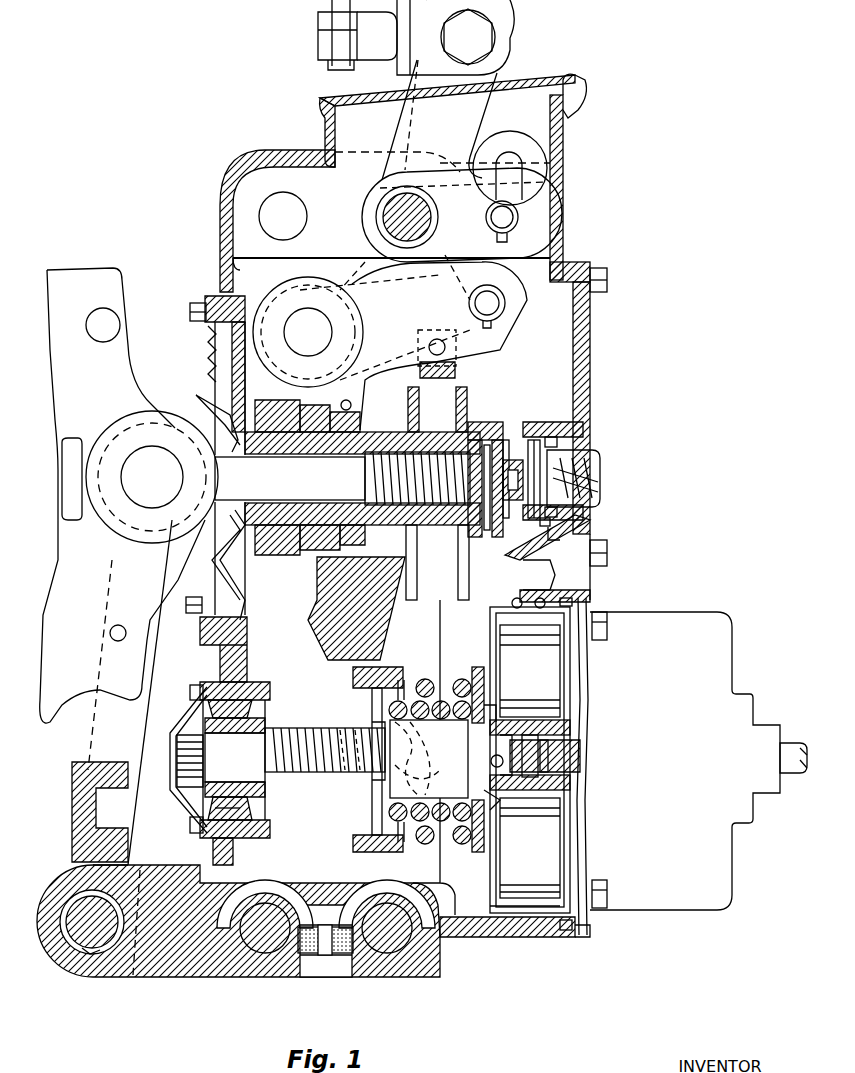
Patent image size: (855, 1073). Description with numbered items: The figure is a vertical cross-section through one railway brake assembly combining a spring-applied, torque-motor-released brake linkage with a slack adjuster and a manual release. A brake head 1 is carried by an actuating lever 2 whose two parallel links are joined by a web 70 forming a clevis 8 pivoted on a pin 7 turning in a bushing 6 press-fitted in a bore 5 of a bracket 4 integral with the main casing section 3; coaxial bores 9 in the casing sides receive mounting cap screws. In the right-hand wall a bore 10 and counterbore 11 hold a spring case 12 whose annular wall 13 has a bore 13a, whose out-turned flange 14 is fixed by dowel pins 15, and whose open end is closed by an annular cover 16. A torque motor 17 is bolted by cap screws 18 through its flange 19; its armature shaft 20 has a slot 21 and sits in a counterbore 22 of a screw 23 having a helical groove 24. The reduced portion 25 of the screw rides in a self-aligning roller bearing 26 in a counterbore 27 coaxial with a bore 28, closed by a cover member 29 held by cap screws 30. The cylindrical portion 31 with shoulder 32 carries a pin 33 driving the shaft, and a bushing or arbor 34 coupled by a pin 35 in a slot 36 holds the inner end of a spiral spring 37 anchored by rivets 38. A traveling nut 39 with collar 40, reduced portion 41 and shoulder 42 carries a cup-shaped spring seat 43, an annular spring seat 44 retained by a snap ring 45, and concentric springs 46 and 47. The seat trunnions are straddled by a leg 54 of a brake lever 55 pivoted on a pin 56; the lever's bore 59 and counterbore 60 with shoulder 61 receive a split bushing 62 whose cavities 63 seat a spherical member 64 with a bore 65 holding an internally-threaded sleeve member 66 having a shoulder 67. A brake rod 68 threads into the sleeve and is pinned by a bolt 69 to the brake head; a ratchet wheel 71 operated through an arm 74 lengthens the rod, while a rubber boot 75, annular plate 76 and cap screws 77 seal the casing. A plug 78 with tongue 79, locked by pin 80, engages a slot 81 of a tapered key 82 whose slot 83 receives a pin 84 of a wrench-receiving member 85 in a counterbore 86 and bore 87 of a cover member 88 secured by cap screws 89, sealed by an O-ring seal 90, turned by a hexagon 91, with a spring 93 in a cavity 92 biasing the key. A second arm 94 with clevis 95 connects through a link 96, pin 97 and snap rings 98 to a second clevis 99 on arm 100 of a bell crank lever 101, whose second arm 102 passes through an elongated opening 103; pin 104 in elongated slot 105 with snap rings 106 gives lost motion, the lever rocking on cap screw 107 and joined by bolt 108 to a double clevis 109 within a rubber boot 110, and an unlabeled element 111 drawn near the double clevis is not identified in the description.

The brake head 1 is at (48, 712).
The actuating lever 2 is at (96, 748).
The main casing section 3 is at (222, 245).
The bracket 4 is at (172, 960).
The bore 5 is at (100, 952).
The bushing 6 is at (75, 940).
The pin 7 is at (88, 935).
The clevis 8 is at (70, 865).
The bores 9 is at (259, 213).
The bore 10 is at (525, 922).
The counterbore 11 is at (585, 935).
The spring case 12 is at (480, 937).
The annular wall 13 is at (490, 862).
The bore 13a is at (496, 710).
The out-turned flange 14 is at (590, 592).
The dowel pins 15 is at (572, 602).
The annular cover 16 is at (560, 860).
The torque motor 17 is at (728, 860).
The cap screws 18 is at (607, 616).
The flange 19 is at (588, 928).
The armature shaft 20 is at (580, 752).
The slot 21 is at (545, 790).
The counterbore 22 is at (565, 772).
The screw 23 is at (312, 775).
The helical groove 24 is at (302, 775).
The reduced portion 25 is at (250, 740).
The self-aligning roller bearing 26 is at (240, 812).
The counterbore 27 is at (258, 688).
The bore 28 is at (250, 708).
The cover member 29 is at (172, 788).
The cap screws 30 is at (190, 700).
The cylindrical portion 31 is at (515, 738).
The shoulder 32 is at (497, 800).
The pin 33 is at (570, 785).
The bushing or arbor 34 is at (570, 732).
The pin 35 is at (492, 768).
The slot 36 is at (483, 765).
The spiral spring 37 is at (548, 672).
The rivets 38 is at (512, 600).
The traveling nut 39 is at (385, 838).
The collar 40 is at (372, 808).
The reduced portion 41 is at (480, 750).
The shoulder 42 is at (470, 735).
The cup-shaped spring seat 43 is at (353, 843).
The annular spring seat 44 is at (478, 670).
The snap ring 45 is at (486, 815).
The spring 46 is at (428, 845).
The spring 47 is at (420, 680).
The leg 54 is at (412, 792).
The brake lever 55 is at (325, 598).
The pin 56 is at (302, 335).
The bore 59 is at (352, 428).
The counterbore 60 is at (280, 398).
The shoulder 61 is at (352, 404).
The split bushing 62 is at (330, 545).
The cavity 63 is at (340, 560).
The member 64 is at (310, 538).
The bore 65 is at (330, 428).
The sleeve member 66 is at (300, 527).
The shoulder 67 is at (300, 412).
The brake rod 68 is at (342, 478).
The bolt 69 is at (140, 498).
The web 70 is at (95, 805).
The ratchet wheel 71 is at (462, 390).
The arm 74 is at (366, 262).
The rubber boot 75 is at (196, 395).
The annular plate 76 is at (208, 340).
The cap screws 77 is at (190, 318).
The plug 78 is at (505, 440).
The tongue 79 is at (533, 438).
The pin 80 is at (490, 428).
The slot 81 is at (512, 520).
The tapered key 82 is at (550, 522).
The slot 83 is at (557, 512).
The pin 84 is at (600, 456).
The wrench-receiving member 85 is at (557, 445).
The counterbore 86 is at (560, 535).
The bore 87 is at (585, 435).
The cover member 88 is at (585, 355).
The cap screws 89 is at (607, 280).
The O-ring seal 90 is at (532, 562).
The hexagon 91 is at (598, 490).
The cavity 92 is at (598, 468).
The spring 93 is at (598, 480).
The second arm 94 is at (402, 360).
The clevis 95 is at (457, 348).
The link 96 is at (500, 290).
The pin 97 is at (495, 308).
The snap ring 98 is at (491, 324).
The second clevis 99 is at (530, 212).
The arm 100 is at (450, 235).
The bell crank lever 101 is at (374, 184).
The second arm 102 is at (410, 113).
The elongated opening 103 is at (545, 127).
The pin 104 is at (508, 222).
The elongated slot 105 is at (520, 170).
The snap ring 106 is at (505, 238).
The cap screw 107 is at (392, 212).
The bolt 108 is at (485, 35).
The double clevis 109 is at (400, 62).
The rubber boot 110 is at (580, 97).
The clevis 111 is at (338, 62).